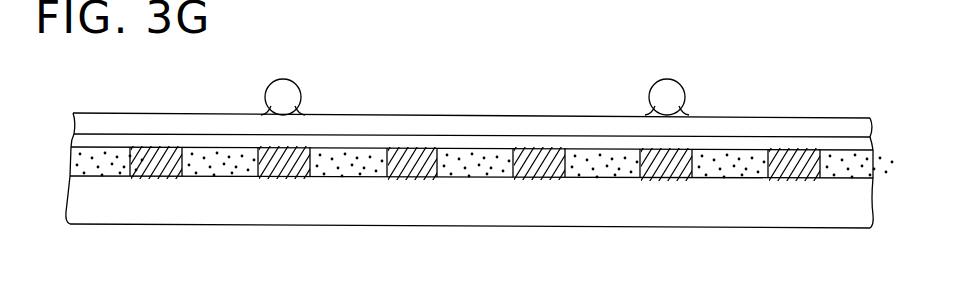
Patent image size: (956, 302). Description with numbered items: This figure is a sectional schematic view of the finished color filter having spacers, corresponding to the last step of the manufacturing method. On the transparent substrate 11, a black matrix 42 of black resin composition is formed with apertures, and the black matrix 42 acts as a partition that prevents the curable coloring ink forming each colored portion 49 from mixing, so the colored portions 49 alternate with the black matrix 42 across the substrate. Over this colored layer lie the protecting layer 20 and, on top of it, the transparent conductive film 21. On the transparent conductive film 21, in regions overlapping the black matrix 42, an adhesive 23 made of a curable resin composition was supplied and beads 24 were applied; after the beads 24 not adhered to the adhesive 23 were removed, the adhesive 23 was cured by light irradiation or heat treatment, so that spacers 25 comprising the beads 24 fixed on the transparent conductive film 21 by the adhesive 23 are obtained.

The transparent substrate 11 is at (672, 210).
The protecting layer 20 is at (548, 140).
The transparent conductive film 21 is at (492, 123).
The adhesive 23 is at (303, 107).
The beads 24 is at (288, 89).
The spacers 25 is at (475, 78).
The black matrix 42 is at (536, 168).
The colored portion 49 is at (482, 167).